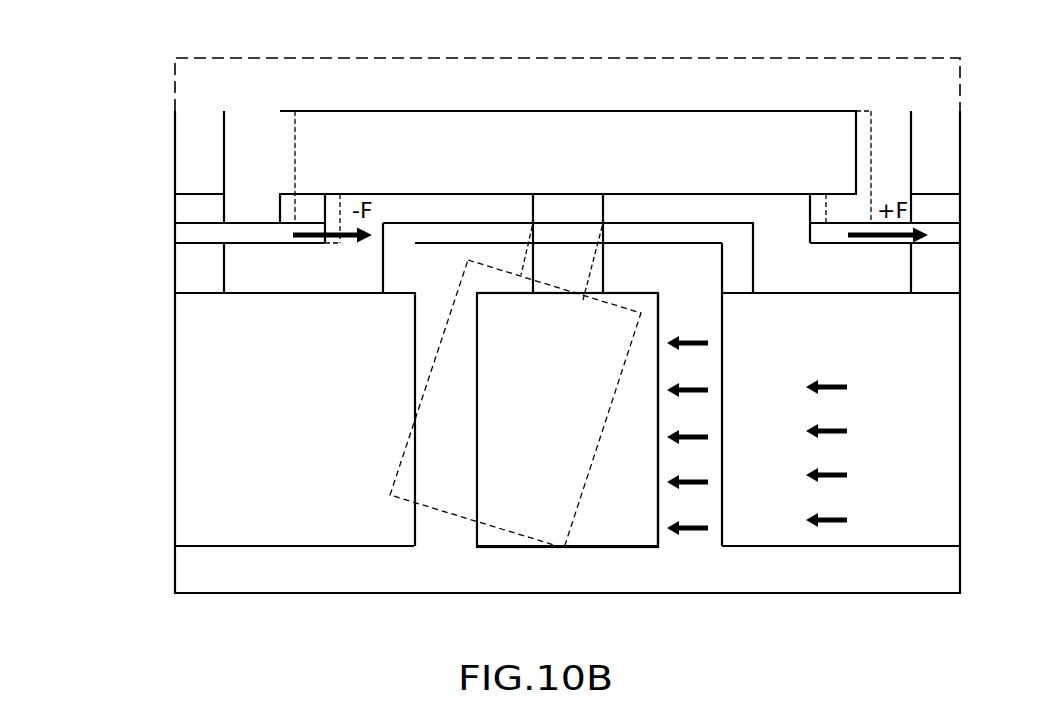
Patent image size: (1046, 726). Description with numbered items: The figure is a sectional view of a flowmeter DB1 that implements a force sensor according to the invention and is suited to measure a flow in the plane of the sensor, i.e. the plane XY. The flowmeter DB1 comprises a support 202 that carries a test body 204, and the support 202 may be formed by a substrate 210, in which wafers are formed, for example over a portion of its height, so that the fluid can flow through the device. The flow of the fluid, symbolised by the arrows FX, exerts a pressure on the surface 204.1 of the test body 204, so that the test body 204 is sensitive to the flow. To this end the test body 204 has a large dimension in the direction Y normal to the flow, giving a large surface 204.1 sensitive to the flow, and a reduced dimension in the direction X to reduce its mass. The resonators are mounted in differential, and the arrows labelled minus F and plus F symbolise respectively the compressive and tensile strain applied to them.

The flowmeter DB1 is at (147, 270).
The substrate 210 is at (188, 366).
The support 202 is at (170, 466).
The test body 204 is at (526, 522).
The surface of the test body 204.1 is at (658, 533).
The arrows symbolising the fluid flow FX is at (833, 477).